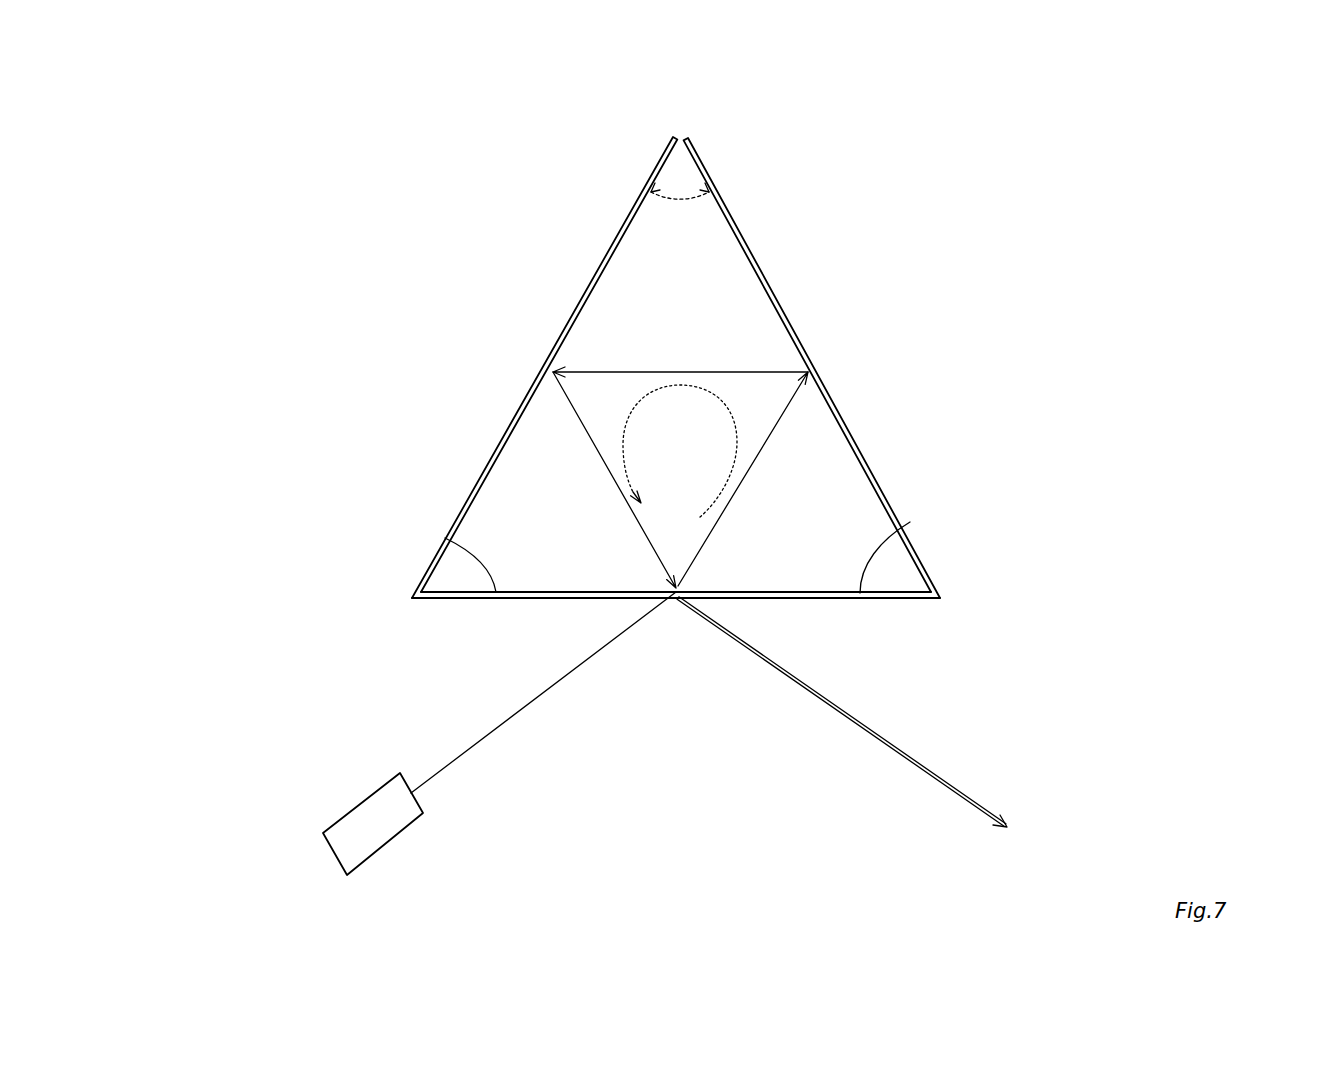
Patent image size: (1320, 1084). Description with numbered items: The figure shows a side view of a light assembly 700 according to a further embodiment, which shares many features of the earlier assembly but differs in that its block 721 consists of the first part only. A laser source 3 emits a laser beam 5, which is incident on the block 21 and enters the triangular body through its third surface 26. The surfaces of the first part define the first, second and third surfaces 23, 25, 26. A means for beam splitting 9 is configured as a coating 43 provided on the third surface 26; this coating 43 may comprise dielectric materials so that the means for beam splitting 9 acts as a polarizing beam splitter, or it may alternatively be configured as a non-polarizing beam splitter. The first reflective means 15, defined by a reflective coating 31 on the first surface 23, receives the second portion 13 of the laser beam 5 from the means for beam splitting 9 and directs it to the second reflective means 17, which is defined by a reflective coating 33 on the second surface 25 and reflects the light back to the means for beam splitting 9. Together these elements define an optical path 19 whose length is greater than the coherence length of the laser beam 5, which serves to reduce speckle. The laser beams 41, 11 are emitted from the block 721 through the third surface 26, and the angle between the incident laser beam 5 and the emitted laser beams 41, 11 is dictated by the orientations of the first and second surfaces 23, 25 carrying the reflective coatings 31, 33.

The light assembly 700 is at (717, 149).
The second reflective means 17 is at (657, 177).
The first reflective means 15 is at (713, 197).
The second portion of the laser beam 13 is at (773, 435).
The second surface 25 is at (616, 243).
The reflective coating 33 is at (596, 271).
The first surface 23 is at (746, 240).
The reflective coating 31 is at (775, 289).
The block 721 is at (750, 345).
The block 21 is at (670, 345).
The optical path 19 is at (622, 436).
The third surface 26 is at (445, 538).
The coating 43 is at (910, 522).
The means for beam splitting 9 is at (937, 597).
The laser source 3 is at (330, 815).
The laser beam 5 is at (480, 747).
The laser beam 11 is at (880, 733).
The laser beam 41 is at (993, 807).